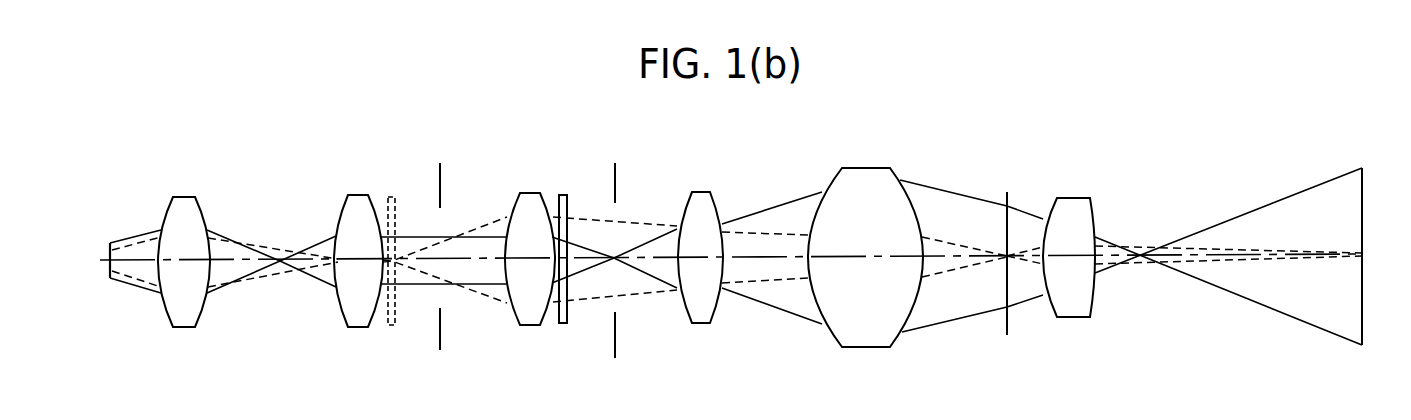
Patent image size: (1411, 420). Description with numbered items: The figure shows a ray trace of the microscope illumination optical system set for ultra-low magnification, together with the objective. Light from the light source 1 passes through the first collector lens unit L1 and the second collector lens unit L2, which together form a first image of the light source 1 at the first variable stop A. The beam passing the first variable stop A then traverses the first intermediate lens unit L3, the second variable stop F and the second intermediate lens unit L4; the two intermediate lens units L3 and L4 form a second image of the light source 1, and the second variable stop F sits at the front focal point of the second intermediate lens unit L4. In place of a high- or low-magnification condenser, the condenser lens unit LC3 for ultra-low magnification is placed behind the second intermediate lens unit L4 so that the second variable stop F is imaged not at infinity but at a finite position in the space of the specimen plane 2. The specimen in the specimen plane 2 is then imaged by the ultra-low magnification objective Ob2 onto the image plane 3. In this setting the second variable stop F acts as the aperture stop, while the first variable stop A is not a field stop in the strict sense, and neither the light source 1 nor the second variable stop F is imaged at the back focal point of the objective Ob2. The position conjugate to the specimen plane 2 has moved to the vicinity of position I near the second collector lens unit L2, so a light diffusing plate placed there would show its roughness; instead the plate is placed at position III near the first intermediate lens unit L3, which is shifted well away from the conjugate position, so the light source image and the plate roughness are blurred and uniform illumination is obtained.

The light source 1 is at (110, 259).
The specimen plane 2 is at (1009, 197).
The image plane 3 is at (1363, 186).
The first collector lens unit L1 is at (183, 233).
The second collector lens unit L2 is at (358, 233).
The first intermediate lens unit L3 is at (530, 226).
The second intermediate lens unit L4 is at (700, 225).
The condenser lens unit for an ultra-low magnification LC3 is at (865, 237).
The ultra-low magnification objective Ob2 is at (1075, 223).
The first variable stop A is at (427, 237).
The second variable stop F is at (612, 241).
The position I is at (399, 380).
The position III is at (575, 380).